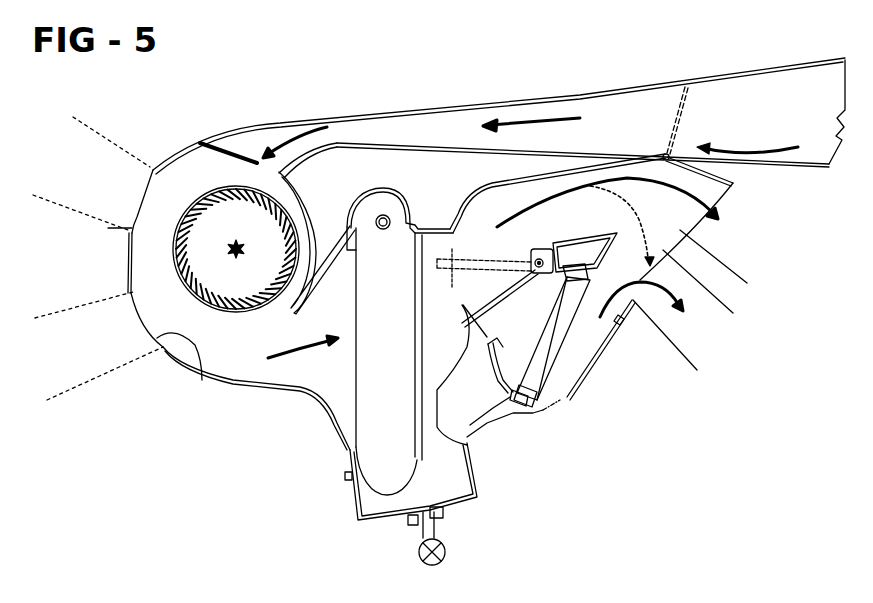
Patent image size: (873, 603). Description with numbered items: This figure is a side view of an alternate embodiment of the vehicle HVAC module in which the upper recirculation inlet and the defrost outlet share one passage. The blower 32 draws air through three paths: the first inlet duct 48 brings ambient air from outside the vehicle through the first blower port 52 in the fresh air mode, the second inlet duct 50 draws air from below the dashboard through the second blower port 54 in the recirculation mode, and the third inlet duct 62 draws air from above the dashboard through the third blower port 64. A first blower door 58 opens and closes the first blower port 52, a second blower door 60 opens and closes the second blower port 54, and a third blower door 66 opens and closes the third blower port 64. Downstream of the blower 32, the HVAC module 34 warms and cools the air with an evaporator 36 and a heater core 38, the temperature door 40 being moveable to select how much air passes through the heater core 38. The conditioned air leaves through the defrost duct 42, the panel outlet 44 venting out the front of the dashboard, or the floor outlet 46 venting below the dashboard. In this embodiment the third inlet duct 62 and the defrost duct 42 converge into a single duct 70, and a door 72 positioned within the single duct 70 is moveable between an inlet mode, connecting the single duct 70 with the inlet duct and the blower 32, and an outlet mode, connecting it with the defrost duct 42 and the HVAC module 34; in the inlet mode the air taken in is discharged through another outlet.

The blower 32 is at (240, 392).
The HVAC module 34 is at (603, 360).
The evaporator 36 is at (355, 423).
The heater core 38 is at (548, 380).
The temperature door 40 is at (476, 452).
The defrost duct 42 is at (607, 163).
The panel outlet 44 is at (777, 225).
The floor outlet 46 is at (697, 365).
The first inlet duct 48 is at (83, 124).
The second inlet duct 50 is at (102, 377).
The first blower port 52 is at (152, 170).
The second blower port 54 is at (163, 347).
The first blower door 58 is at (107, 228).
The second blower door 60 is at (201, 382).
The third inlet duct 62 is at (377, 117).
The third blower port 64 is at (293, 174).
The third blower door 66 is at (220, 150).
The single duct 70 is at (748, 70).
The door 72 is at (733, 172).